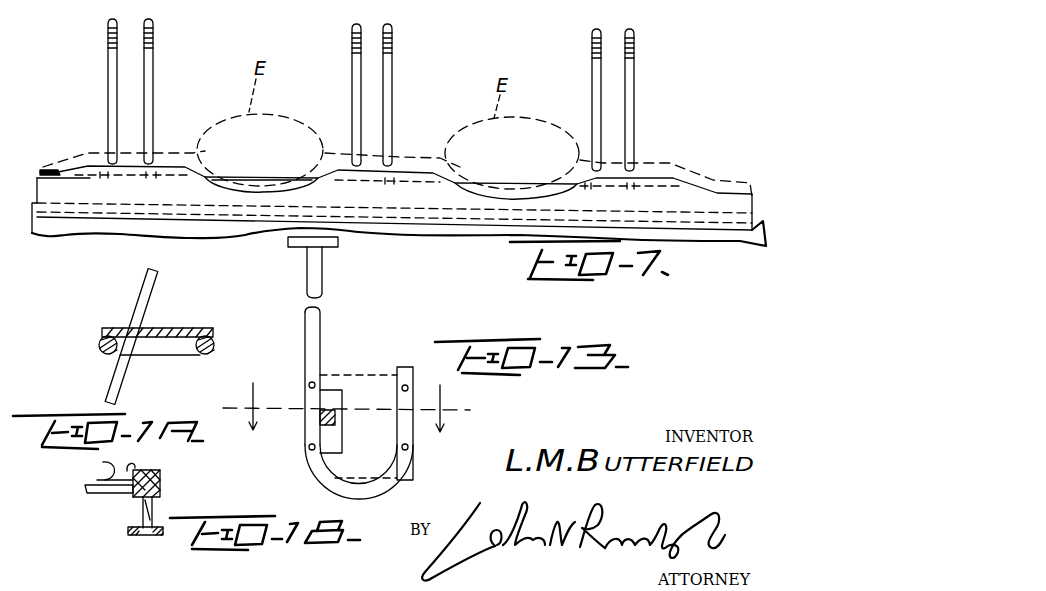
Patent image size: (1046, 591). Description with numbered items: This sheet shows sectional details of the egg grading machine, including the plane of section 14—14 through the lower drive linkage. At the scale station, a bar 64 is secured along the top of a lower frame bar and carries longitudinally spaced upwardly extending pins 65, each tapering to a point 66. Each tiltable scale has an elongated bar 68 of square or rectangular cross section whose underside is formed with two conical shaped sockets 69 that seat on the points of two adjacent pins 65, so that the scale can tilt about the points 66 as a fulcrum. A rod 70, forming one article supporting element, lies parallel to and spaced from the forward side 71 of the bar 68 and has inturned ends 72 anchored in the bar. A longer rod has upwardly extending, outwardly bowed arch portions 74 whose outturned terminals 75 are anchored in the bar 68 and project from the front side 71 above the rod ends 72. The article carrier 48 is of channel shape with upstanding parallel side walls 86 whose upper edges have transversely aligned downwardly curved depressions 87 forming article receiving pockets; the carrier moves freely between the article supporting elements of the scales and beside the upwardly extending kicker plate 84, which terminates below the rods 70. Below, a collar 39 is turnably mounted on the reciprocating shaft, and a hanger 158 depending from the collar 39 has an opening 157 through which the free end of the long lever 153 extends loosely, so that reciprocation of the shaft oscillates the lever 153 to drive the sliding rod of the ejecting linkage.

In FIG. 13, the collar 39 is at (330, 247).
In FIG. 7, the article carrier 48 is at (88, 224).
In FIG. 18, the bar 64 is at (130, 534).
In FIG. 18, the pins 65 is at (143, 520).
In FIG. 18, the point 66 is at (162, 483).
In FIG. 18, the elongated bar 68 is at (158, 470).
In FIG. 18, the conical shaped sockets 69 is at (153, 510).
In FIG. 7, the rod 70 is at (50, 170).
In FIG. 18, the forward side 71 is at (139, 456).
In FIG. 18, the inturned ends 72 is at (100, 493).
In FIG. 7, the arch portions 74 is at (387, 95).
In FIG. 18, the outturned terminals 75 is at (100, 468).
In FIG. 7, the kicker plate 84 is at (43, 230).
In FIG. 7, the side walls 86 is at (131, 197).
In FIG. 7, the depressions 87 is at (255, 190).
In FIG. 13, the section line 14- 14 is at (349, 407).
In FIG. 13, the long lever 153 is at (335, 410).
In FIG. 14, the long lever 153 is at (152, 290).
In FIG. 13, the opening 157 is at (317, 448).
In FIG. 14, the opening 157 is at (125, 328).
In FIG. 13, the hanger 158 is at (383, 460).
In FIG. 14, the hanger 158 is at (187, 328).